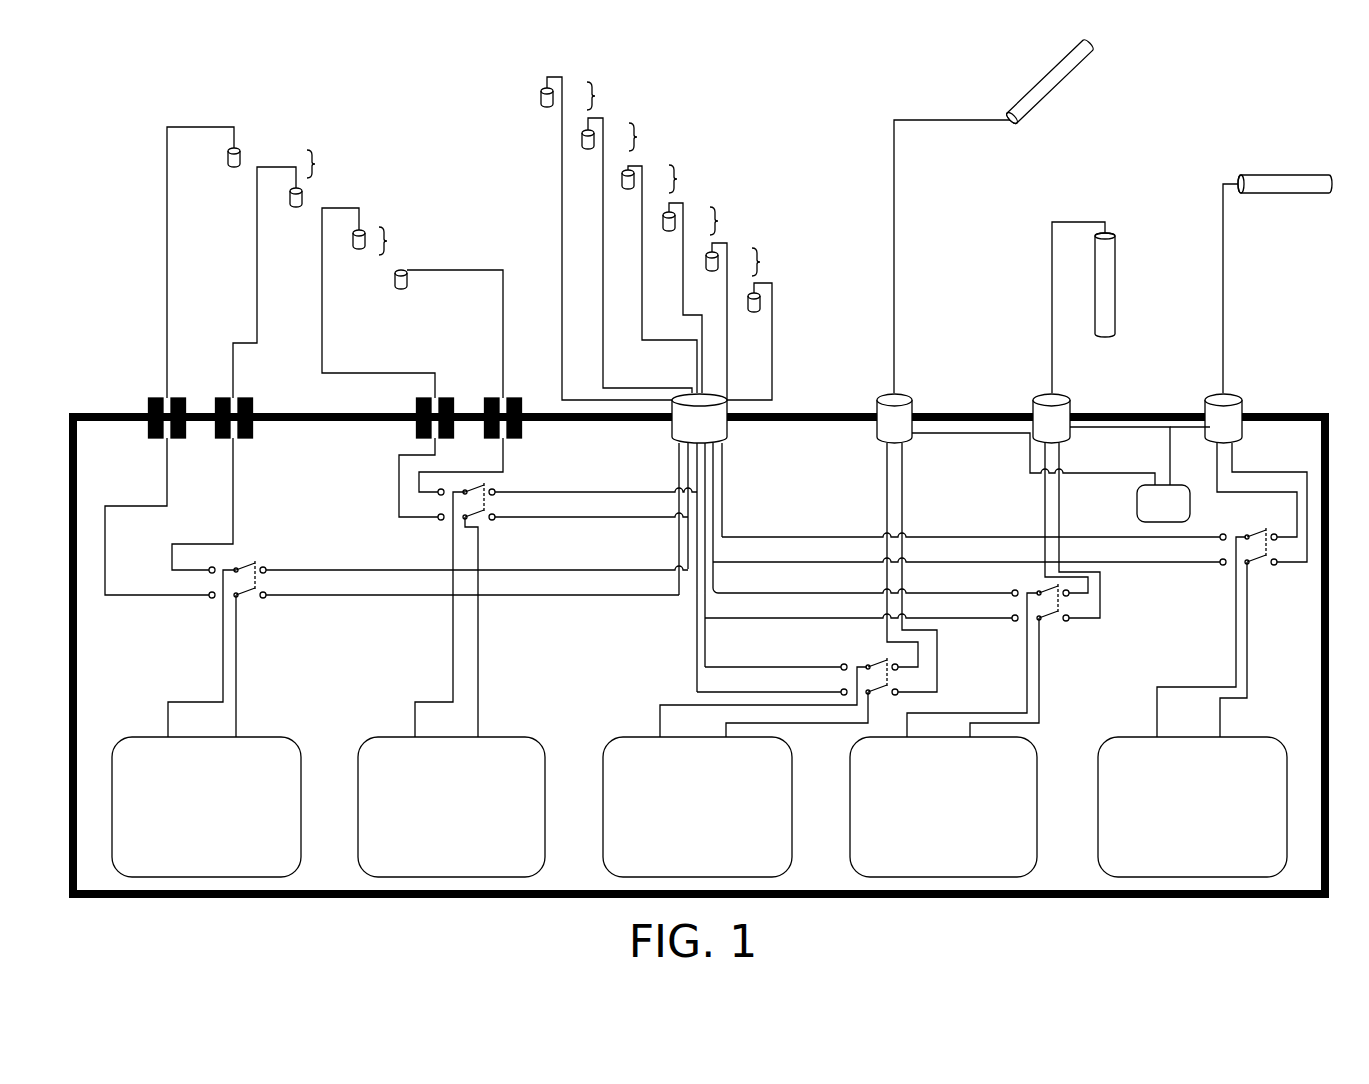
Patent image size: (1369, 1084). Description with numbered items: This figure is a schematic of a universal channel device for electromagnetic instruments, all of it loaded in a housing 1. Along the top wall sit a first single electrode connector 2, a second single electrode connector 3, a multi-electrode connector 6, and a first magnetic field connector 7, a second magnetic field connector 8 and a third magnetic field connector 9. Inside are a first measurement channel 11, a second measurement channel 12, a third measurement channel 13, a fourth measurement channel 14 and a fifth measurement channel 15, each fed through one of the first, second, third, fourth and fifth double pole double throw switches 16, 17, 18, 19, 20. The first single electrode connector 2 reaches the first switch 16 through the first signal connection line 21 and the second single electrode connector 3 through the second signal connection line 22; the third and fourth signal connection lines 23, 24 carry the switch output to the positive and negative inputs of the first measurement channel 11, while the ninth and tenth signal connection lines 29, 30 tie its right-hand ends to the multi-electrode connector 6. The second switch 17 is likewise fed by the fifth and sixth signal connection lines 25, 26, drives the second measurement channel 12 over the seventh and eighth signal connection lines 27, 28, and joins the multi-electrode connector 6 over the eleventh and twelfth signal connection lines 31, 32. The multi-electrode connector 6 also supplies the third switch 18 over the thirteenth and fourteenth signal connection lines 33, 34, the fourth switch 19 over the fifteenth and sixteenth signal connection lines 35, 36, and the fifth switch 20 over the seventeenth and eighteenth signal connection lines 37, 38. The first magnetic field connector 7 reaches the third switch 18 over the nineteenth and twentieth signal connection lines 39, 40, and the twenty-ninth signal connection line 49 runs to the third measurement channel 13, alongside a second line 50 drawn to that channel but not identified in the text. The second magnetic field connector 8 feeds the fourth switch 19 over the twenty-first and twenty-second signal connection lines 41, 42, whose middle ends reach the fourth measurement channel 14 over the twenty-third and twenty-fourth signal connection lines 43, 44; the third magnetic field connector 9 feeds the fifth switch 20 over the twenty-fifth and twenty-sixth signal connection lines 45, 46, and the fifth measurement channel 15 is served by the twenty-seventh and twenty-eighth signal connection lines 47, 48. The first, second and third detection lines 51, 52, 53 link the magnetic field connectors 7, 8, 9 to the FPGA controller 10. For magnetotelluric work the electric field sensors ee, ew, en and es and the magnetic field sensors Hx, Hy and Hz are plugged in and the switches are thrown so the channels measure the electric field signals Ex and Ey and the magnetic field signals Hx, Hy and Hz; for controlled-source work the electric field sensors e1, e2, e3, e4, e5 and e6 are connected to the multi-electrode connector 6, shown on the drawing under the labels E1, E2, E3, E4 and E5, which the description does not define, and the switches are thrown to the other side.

The housing 1 is at (699, 638).
The first single electrode connector 2 is at (156, 410).
The second single electrode connector 3 is at (243, 410).
The multi-electrode connector 6 is at (699, 543).
The first magnetic field connector 7 is at (894, 418).
The second magnetic field connector 8 is at (1051, 418).
The third magnetic field connector 9 is at (1223, 418).
The FPGA controller 10 is at (1163, 503).
The first measurement channel 11 is at (206, 807).
The second measurement channel 12 is at (451, 807).
The third measurement channel 13 is at (697, 807).
The fourth measurement channel 14 is at (943, 807).
The fifth measurement channel 15 is at (1192, 807).
The first double pole double throw switch 16 is at (237, 579).
The second double pole double throw switch 17 is at (466, 501).
The third double pole double throw switch 18 is at (869, 676).
The fourth double pole double throw switch 19 is at (1040, 602).
The fifth double pole double throw switch 20 is at (1248, 546).
The first signal connection line 21 is at (157, 516).
The second signal connection line 22 is at (220, 504).
The third signal connection line 23 is at (202, 653).
The fourth signal connection line 24 is at (250, 666).
The fifth signal connection line 25 is at (401, 477).
The sixth signal connection line 26 is at (461, 465).
The seventh signal connection line 27 is at (440, 614).
The eighth signal connection line 28 is at (490, 627).
The ninth signal connection line 29 is at (472, 580).
The tenth signal connection line 30 is at (477, 554).
The eleventh signal connection line 31 is at (591, 505).
The twelfth signal connection line 32 is at (596, 478).
The thirteenth signal connection line 33 is at (769, 680).
The fourteenth signal connection line 34 is at (773, 657).
The fifteenth signal connection line 35 is at (858, 607).
The sixteenth signal connection line 36 is at (865, 582).
The seventeenth signal connection line 37 is at (966, 548).
The eighteenth signal connection line 38 is at (971, 525).
The nineteenth signal connection line 39 is at (886, 555).
The twentieth signal connection line 40 is at (917, 567).
The twenty-first signal connection line 41 is at (1049, 518).
The twenty-second signal connection line 42 is at (1079, 530).
The twenty-third signal connection line 43 is at (972, 665).
The twenty-fourth signal connection line 44 is at (1020, 677).
The twenty-fifth signal connection line 45 is at (1257, 490).
The twenty-sixth signal connection line 46 is at (1269, 502).
The twenty-seventh signal connection line 47 is at (1201, 637).
The twenty-eighth signal connection line 48 is at (1249, 649).
The twenty-ninth signal connection line 49 is at (744, 702).
The wire 50 is at (797, 726).
The first detection line 51 is at (1033, 459).
The second detection line 52 is at (1120, 456).
The third detection line 53 is at (1194, 448).
The electric field sensor ee is at (203, 262).
The electric field sensor ew is at (267, 282).
The electric field sensor en is at (378, 303).
The electric field sensor es is at (435, 331).
The electric field signal Ex is at (326, 166).
The electric field signal Ey is at (397, 243).
The electric field sensor e1 is at (600, 238).
The electric field sensor e2 is at (631, 255).
The electric field sensor e3 is at (654, 279).
The electric field sensor e4 is at (678, 298).
The electric field sensor e5 is at (711, 321).
The electric field sensor e6 is at (749, 341).
The electrode pair E1 is at (607, 97).
The electrode pair E2 is at (649, 139).
The electrode pair E3 is at (689, 181).
The electrode pair E4 is at (729, 222).
The electrode pair E5 is at (769, 263).
The magnetic field sensor Hx is at (994, 215).
The magnetic field sensor Hy is at (1277, 268).
The magnetic field sensor Hz is at (1086, 307).